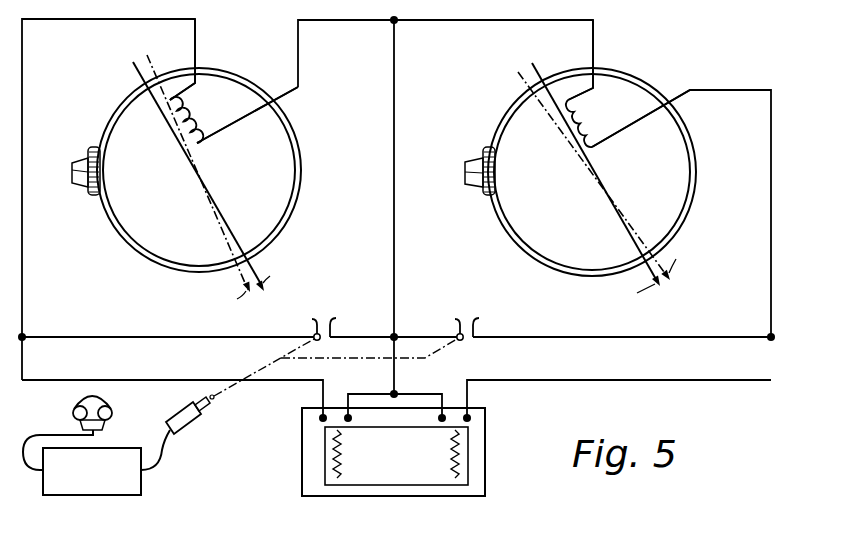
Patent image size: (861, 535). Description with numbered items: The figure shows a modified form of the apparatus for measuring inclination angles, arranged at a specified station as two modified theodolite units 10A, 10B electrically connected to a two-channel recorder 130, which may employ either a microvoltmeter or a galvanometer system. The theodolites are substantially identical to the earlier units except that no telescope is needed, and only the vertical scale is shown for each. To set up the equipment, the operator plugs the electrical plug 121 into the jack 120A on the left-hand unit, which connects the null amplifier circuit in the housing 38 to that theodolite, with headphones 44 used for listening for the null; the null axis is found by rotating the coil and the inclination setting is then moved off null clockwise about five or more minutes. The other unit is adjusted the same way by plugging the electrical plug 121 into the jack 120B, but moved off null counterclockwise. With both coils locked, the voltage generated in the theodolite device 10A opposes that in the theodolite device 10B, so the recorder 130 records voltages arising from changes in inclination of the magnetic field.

The modified theodolite 10A is at (211, 169).
The modified theodolite 10B is at (594, 163).
The housing 38 is at (142, 482).
The headphones 44 is at (113, 411).
The jack 120A is at (336, 318).
The jack 120B is at (479, 318).
The electrical plug 121 is at (206, 413).
The two-channel recorder 130 is at (486, 424).